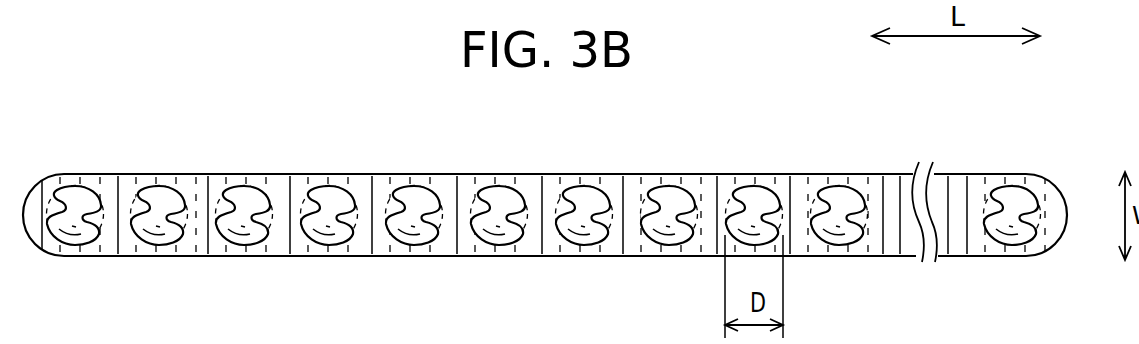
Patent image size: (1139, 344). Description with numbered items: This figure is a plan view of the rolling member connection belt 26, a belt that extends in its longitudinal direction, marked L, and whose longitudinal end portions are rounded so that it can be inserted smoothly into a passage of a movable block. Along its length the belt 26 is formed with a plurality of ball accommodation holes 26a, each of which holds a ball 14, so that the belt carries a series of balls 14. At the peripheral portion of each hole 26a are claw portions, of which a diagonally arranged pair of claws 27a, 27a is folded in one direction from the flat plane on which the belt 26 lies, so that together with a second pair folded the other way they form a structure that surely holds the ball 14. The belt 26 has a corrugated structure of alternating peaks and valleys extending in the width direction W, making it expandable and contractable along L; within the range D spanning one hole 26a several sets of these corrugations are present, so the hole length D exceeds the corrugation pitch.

The rolling member connection belt 26 is at (695, 178).
The ball accommodation hole 26a is at (763, 200).
The claw portion 27a is at (573, 192).
The ball 14 is at (584, 224).